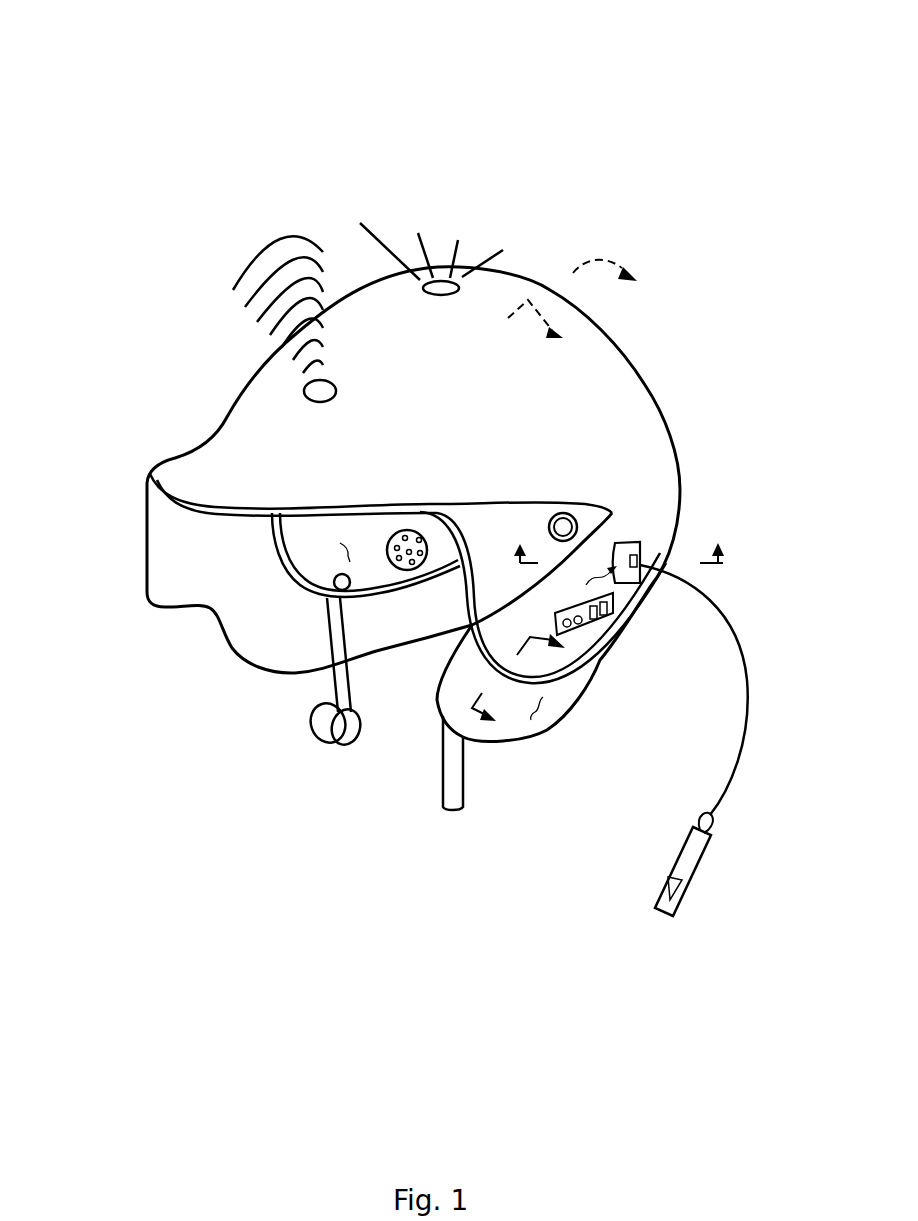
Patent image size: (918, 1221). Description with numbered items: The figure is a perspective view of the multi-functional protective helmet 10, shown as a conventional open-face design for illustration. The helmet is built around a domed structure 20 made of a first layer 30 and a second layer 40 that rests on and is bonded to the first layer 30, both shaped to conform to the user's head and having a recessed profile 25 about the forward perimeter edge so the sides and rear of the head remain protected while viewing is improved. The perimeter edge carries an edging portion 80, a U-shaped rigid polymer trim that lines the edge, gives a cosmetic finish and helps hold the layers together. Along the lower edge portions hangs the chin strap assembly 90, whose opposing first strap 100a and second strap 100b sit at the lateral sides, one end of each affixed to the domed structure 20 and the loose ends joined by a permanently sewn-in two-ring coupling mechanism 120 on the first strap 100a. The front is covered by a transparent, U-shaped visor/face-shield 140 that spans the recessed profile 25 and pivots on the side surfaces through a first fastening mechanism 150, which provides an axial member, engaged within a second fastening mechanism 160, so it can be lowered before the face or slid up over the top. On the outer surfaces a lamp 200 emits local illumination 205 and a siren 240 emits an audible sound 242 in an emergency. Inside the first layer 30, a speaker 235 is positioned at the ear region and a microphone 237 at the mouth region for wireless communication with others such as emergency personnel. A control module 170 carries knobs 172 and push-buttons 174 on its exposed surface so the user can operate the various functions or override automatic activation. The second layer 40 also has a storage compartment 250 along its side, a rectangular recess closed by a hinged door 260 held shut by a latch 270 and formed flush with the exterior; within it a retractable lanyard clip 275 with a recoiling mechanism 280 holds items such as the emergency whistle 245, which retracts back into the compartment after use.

The multi-functional protective helmet 10 is at (95, 170).
The domed structure 20 is at (633, 308).
The recessed profile 25 is at (213, 503).
The first layer 30 is at (343, 555).
The second layer 40 is at (590, 387).
The edging portion 80 is at (282, 558).
The chin strap assembly 90 is at (516, 748).
The first strap 100a is at (340, 702).
The second strap 100b is at (453, 775).
The coupling mechanism 120 is at (335, 747).
The visor/face-shield 140 is at (167, 583).
The first fastening mechanism 150 is at (608, 515).
The second fastening mechanism 160 is at (567, 523).
The control module 170 is at (612, 603).
The knob 172 is at (590, 626).
The push-button 174 is at (567, 627).
The lamp 200 is at (436, 288).
The local illumination 205 is at (440, 253).
The speaker 235 is at (397, 568).
The microphone 237 is at (335, 585).
The siren 240 is at (318, 390).
The audible sound 242 is at (290, 252).
The emergency whistle 245 is at (678, 860).
The storage compartment 250 is at (585, 586).
The door 260 is at (716, 538).
The latch 270 is at (640, 558).
The retractable lanyard clip 275 is at (747, 675).
The recoiling mechanism 280 is at (628, 547).